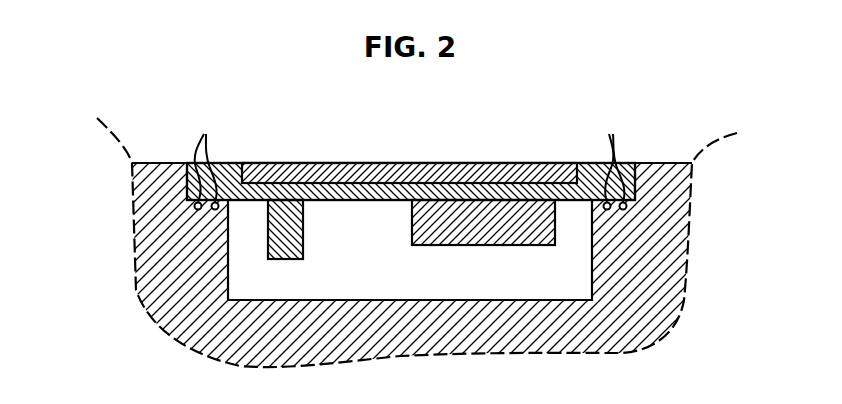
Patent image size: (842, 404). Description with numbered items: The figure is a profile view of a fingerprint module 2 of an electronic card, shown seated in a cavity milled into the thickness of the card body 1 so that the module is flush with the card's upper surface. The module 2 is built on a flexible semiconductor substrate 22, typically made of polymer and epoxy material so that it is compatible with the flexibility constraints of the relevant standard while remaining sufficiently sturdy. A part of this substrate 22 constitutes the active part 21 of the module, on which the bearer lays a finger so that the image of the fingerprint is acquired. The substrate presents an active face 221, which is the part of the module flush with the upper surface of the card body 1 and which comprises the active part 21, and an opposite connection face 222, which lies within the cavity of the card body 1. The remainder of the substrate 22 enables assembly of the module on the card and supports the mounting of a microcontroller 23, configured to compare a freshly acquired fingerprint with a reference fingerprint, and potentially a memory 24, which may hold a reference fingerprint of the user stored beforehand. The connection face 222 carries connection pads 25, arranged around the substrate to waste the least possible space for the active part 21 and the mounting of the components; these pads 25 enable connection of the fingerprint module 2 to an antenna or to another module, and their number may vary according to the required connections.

The card body 1 is at (403, 338).
The fingerprint module 2 is at (440, 148).
The active part 21 is at (299, 170).
The flexible semiconductor substrate 22 is at (343, 192).
The active face 221 is at (383, 163).
The connection face 222 is at (367, 201).
The microcontroller 23 is at (483, 223).
The memory 24 is at (287, 234).
The connection pads 25 is at (412, 158).